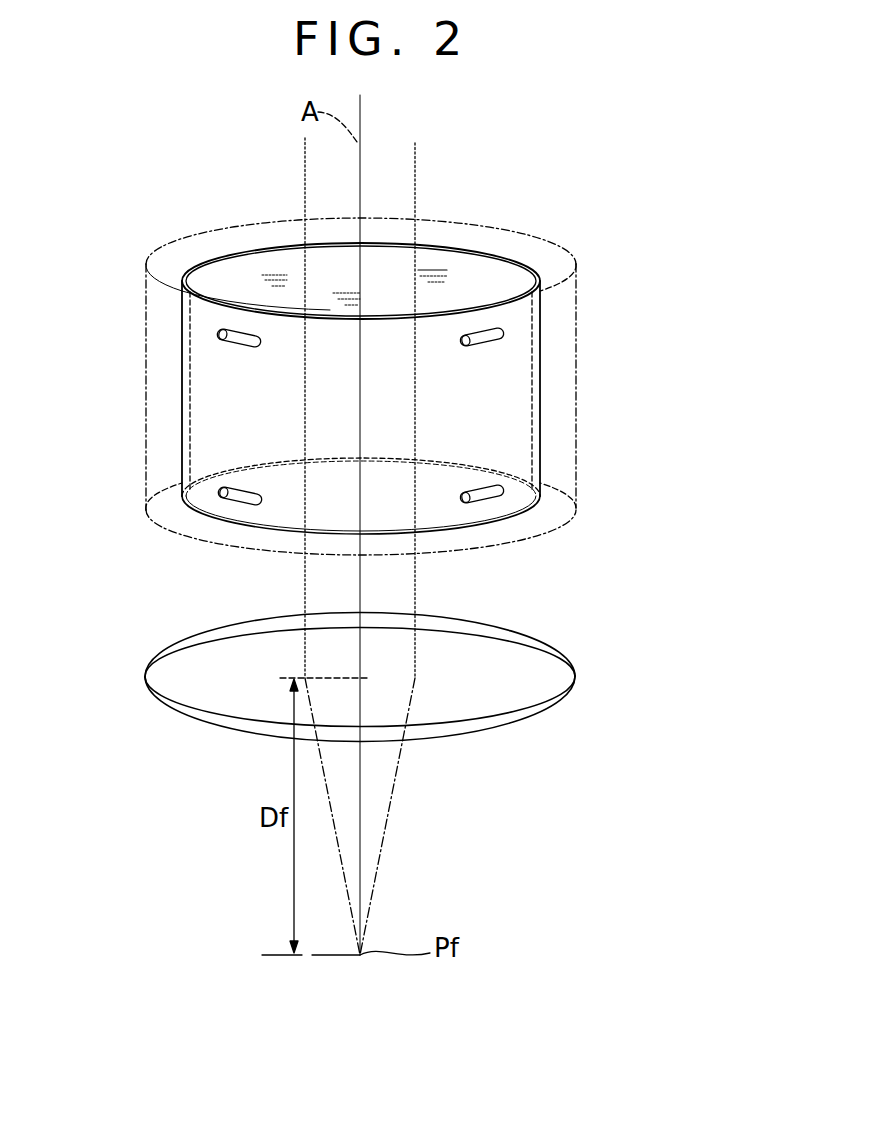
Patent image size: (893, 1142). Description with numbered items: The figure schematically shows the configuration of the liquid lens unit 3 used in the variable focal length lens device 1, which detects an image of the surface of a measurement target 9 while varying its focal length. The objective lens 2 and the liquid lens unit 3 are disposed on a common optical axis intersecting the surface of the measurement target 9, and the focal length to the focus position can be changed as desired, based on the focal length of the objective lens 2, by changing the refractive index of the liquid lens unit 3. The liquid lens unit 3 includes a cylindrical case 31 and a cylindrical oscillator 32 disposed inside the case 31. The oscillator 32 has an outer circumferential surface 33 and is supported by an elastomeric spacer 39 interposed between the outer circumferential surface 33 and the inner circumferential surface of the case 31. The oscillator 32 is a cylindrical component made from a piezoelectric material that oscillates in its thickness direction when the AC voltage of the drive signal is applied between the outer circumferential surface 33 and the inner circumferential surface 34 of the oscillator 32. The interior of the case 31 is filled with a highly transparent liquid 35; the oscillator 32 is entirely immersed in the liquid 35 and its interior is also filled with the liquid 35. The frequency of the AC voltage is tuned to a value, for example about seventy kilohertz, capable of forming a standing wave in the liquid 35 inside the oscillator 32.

The variable focal length lens device 1 is at (666, 150).
The objective lens 2 is at (140, 665).
The liquid lens unit 3 is at (140, 261).
The cylindrical case 31 is at (146, 347).
The cylindrical oscillator 32 is at (182, 418).
The outer circumferential surface 33 is at (528, 290).
The inner circumferential surface 34 is at (483, 284).
The highly transparent liquid 35 is at (428, 268).
The elastomeric spacer 39 is at (237, 487).
The measurement target 9 is at (270, 954).